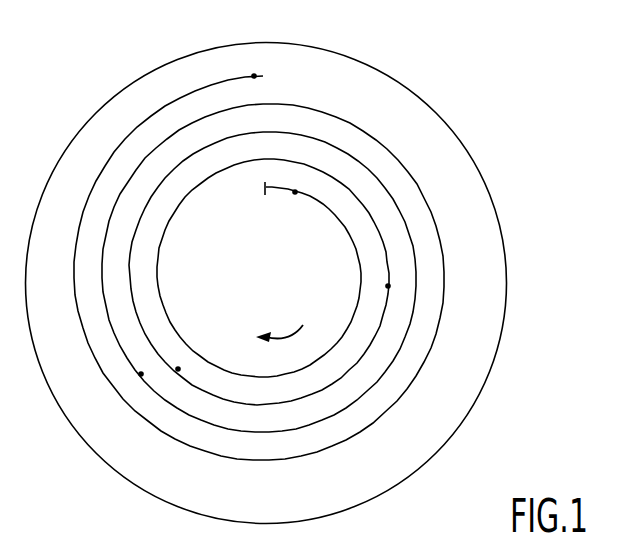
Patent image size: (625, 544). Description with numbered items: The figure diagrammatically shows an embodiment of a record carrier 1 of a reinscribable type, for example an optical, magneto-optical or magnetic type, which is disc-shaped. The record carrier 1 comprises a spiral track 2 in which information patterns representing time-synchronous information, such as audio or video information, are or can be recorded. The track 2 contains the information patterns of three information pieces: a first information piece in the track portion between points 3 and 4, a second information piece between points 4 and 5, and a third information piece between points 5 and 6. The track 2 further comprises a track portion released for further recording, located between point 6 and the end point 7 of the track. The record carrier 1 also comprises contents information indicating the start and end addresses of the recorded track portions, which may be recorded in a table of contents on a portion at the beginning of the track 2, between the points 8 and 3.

The record carrier 1 is at (490, 190).
The spiral track 2 is at (222, 458).
The point 3 is at (295, 195).
The point 4 is at (388, 286).
The point 5 is at (178, 369).
The point 6 is at (141, 374).
The end point of the track 7 is at (254, 74).
The point 8 is at (265, 187).